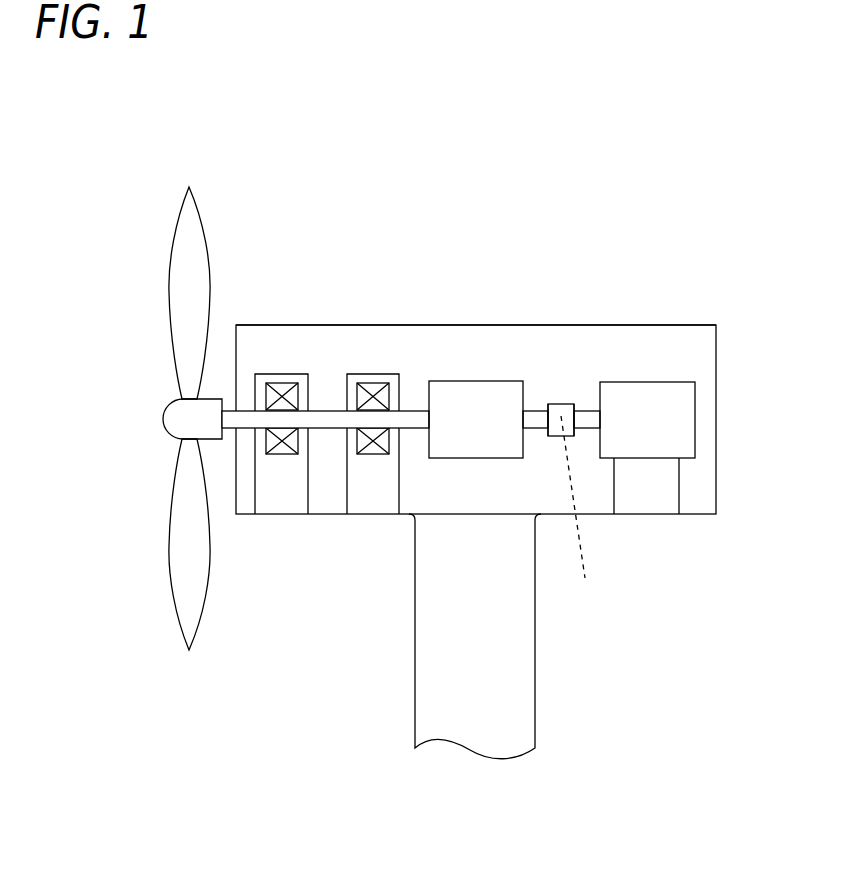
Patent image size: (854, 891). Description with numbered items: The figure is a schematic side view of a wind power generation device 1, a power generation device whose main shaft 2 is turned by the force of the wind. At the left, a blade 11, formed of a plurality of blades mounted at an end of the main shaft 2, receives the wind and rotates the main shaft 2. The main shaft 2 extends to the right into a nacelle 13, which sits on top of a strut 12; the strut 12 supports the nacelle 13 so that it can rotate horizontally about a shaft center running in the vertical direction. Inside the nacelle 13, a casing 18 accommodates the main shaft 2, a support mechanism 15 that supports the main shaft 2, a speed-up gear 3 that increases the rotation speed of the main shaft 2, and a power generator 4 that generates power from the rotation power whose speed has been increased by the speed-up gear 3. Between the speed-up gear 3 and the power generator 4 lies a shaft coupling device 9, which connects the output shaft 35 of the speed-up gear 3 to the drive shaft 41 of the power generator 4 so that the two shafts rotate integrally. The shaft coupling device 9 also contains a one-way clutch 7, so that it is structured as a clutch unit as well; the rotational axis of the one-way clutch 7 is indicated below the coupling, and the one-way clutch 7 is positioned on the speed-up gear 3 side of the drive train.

The wind power generation device 1 is at (714, 216).
The main shaft 2 is at (330, 410).
The speed-up gear 3 is at (497, 385).
The power generator 4 is at (643, 395).
The one-way clutch 7 is at (578, 510).
The shaft coupling device 9 is at (566, 404).
The blade 11 is at (177, 254).
The strut 12 is at (525, 633).
The nacelle 13 is at (551, 303).
The support mechanism 15 is at (293, 340).
The casing 18 is at (465, 325).
The output shaft 35 is at (537, 431).
The drive shaft 41 is at (585, 431).